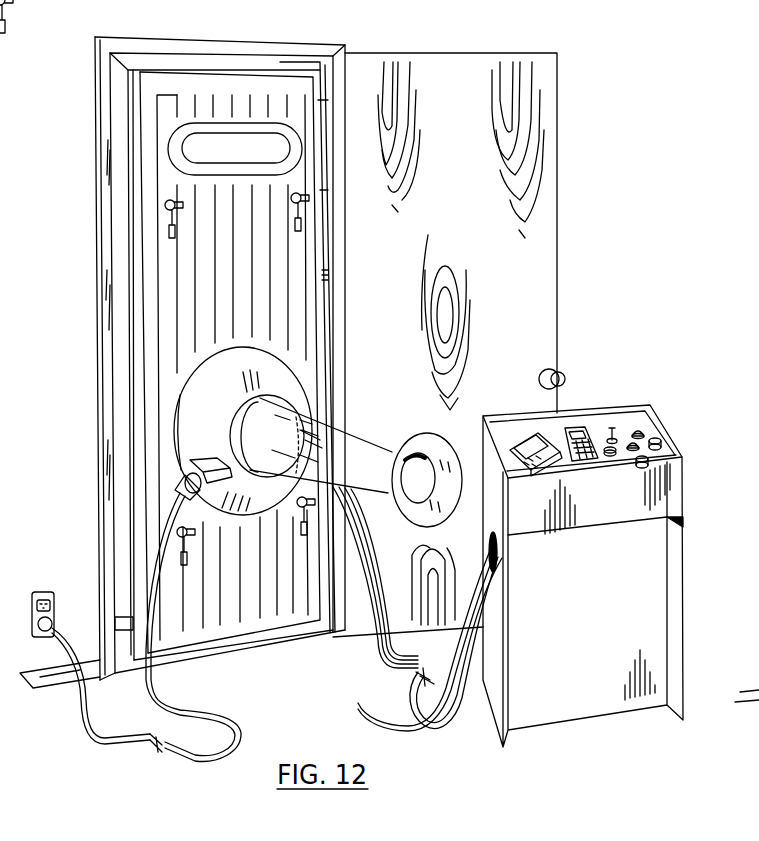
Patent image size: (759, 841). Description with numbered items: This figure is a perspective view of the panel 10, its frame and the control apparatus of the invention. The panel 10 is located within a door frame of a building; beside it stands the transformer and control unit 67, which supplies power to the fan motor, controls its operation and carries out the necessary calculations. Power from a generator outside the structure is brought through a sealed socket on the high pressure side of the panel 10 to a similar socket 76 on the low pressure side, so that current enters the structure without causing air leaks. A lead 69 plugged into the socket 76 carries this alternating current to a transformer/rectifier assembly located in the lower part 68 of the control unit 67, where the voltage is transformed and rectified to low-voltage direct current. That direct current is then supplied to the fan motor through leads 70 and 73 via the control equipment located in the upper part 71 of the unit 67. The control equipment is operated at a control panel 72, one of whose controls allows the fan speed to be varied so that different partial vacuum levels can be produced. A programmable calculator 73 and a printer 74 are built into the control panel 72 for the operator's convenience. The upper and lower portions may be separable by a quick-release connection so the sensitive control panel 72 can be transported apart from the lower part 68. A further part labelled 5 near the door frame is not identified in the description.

The panel 10 is at (243, 83).
The door edge 5 is at (325, 192).
The transformer and control unit 67 is at (690, 574).
The lower part of the control unit 68 is at (598, 620).
The lead 69 is at (167, 708).
The lead 70 is at (358, 706).
The upper part of the control unit 71 is at (670, 512).
The control panel 72 is at (662, 460).
The programmable calculator 73 is at (592, 435).
The printer 74 is at (517, 442).
The socket 76 is at (203, 456).